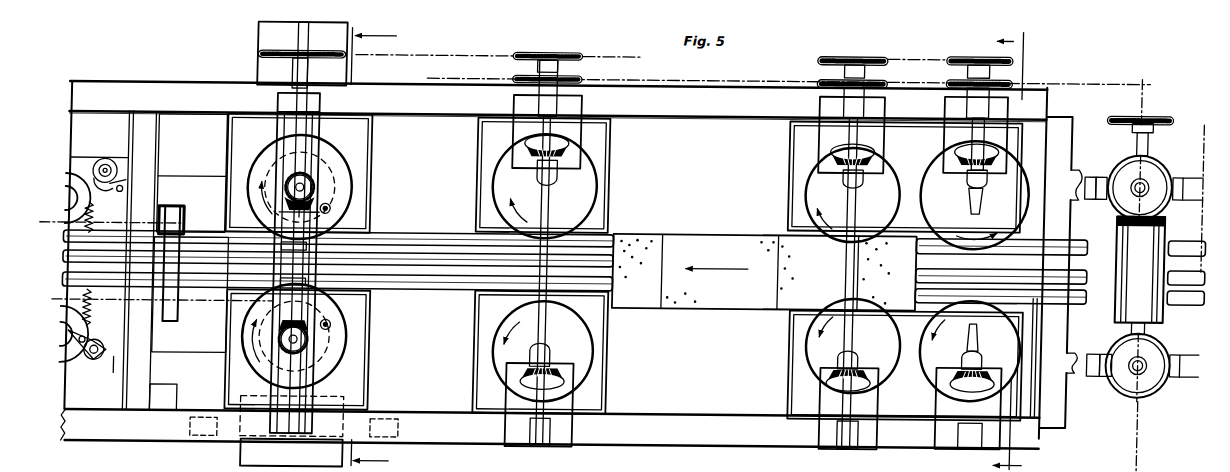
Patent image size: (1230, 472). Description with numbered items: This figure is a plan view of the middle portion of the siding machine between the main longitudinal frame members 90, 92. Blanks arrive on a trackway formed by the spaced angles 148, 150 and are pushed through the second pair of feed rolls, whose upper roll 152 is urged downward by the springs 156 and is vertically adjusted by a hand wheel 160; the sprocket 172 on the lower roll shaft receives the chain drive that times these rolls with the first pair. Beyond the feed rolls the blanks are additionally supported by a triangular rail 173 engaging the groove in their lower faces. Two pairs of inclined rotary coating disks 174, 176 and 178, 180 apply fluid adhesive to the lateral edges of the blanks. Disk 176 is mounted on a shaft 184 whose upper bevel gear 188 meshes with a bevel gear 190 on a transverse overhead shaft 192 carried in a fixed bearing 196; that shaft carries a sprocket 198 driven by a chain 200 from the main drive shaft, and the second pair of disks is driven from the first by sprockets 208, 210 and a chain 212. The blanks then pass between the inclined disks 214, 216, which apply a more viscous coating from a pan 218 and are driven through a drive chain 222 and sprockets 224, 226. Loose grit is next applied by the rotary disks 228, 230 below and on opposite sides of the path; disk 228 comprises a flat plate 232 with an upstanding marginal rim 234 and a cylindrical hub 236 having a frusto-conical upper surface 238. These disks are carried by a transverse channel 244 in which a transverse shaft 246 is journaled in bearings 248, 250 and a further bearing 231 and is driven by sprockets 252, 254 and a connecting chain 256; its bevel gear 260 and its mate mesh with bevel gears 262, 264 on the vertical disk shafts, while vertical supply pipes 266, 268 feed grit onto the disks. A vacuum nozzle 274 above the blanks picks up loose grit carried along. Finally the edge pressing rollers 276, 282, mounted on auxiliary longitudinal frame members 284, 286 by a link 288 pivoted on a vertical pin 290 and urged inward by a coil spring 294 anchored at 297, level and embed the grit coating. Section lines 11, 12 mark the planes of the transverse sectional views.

The section line 11- 11 is at (999, 248).
The section line 12- 12 is at (371, 247).
The main longitudinal frame member 90 is at (693, 107).
The main longitudinal frame member 92 is at (550, 430).
The angle 148 is at (1062, 234).
The angle 150 is at (1120, 306).
The upper roll 152 is at (1150, 240).
The spring 156 is at (1164, 437).
The hand wheel 160 is at (1122, 158).
The sprocket 172 is at (1130, 107).
The triangular rail 173 is at (446, 229).
The coating disk 174 is at (940, 372).
The coating disk 176 is at (966, 148).
The coating disk 178 is at (812, 188).
The coating disk 180 is at (878, 338).
The shaft 184 is at (968, 440).
The bevel gear 188 is at (958, 143).
The bevel gear 190 is at (970, 175).
The transverse overhead shaft 192 is at (968, 204).
The bearing 196 is at (946, 102).
The sprocket 198 is at (1010, 76).
The chain 200 is at (1143, 75).
The sprocket 208 is at (858, 50).
The sprocket 210 is at (1010, 52).
The chain 212 is at (874, 79).
The inclined coating disk 214 is at (600, 186).
The inclined coating disk 216 is at (596, 348).
The pan 218 is at (613, 384).
The drive chain 222 is at (713, 79).
The sprocket 224 is at (512, 75).
The sprocket 226 is at (818, 71).
The grit applying disk 228 is at (344, 143).
The grit applying disk 230 is at (354, 356).
The shaft 231 is at (276, 293).
The flat plate 232 is at (258, 153).
The marginal rim 234 is at (325, 164).
The cylindrical hub 236 is at (318, 177).
The frusto-conical upper surface 238 is at (330, 154).
The transverse channel 244 is at (300, 404).
The transverse shaft 246 is at (335, 112).
The bearing 248 is at (278, 100).
The bearing 250 is at (264, 208).
The sprocket 252 is at (257, 53).
The sprocket 254 is at (553, 50).
The connecting chain 256 is at (441, 52).
The bevel gear 260 is at (268, 326).
The bevel gear 262 is at (334, 201).
The bevel gear 264 is at (316, 340).
The supply pipe 266 is at (345, 210).
The supply pipe 268 is at (337, 322).
The vacuum nozzle 274 is at (176, 322).
The edge pressing roller 276 is at (96, 212).
The edge pressing roller 282 is at (84, 360).
The auxiliary longitudinal frame member 284 is at (120, 374).
The auxiliary longitudinal frame member 286 is at (80, 152).
The link 288 is at (103, 158).
The vertical pin 290 is at (113, 165).
The coil spring 294 is at (129, 214).
The anchor 297 is at (125, 187).